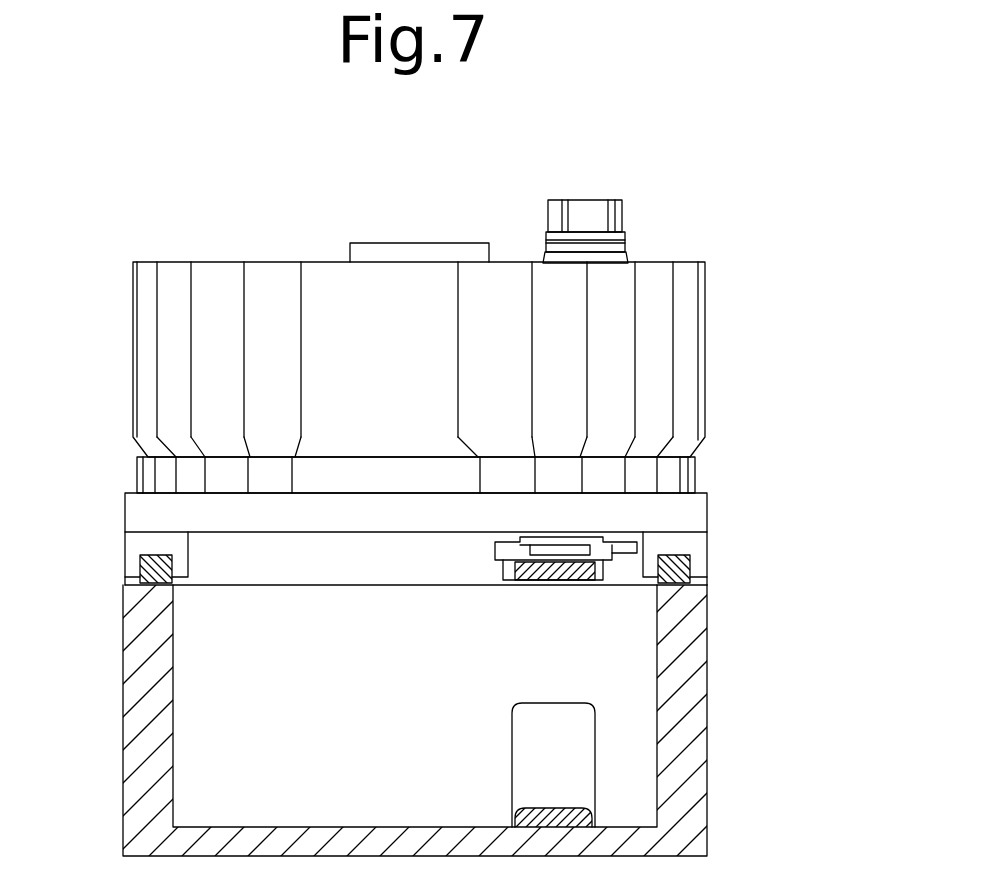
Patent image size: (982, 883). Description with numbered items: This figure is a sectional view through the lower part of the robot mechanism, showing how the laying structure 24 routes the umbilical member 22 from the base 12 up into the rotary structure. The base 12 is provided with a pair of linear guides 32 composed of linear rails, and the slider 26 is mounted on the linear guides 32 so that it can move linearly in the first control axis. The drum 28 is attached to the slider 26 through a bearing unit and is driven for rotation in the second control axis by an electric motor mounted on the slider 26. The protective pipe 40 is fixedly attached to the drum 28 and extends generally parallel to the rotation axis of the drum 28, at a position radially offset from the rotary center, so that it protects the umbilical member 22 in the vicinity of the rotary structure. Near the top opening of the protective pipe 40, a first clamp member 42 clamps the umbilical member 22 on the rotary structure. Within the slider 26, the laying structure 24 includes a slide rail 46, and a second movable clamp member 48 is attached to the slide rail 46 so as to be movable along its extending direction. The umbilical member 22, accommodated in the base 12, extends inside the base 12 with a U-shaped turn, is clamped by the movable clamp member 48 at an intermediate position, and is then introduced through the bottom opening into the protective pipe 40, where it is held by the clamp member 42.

The base 12 is at (135, 770).
The umbilical member 22 is at (562, 570).
The laying structure 24 is at (820, 560).
The slider 26 is at (143, 513).
The drum 28 is at (160, 338).
The linear guides 32 is at (145, 566).
The protective pipe 40 is at (630, 260).
The first clamp member 42 is at (591, 212).
The slide rail 46 is at (612, 540).
The second movable clamp member 48 is at (560, 572).